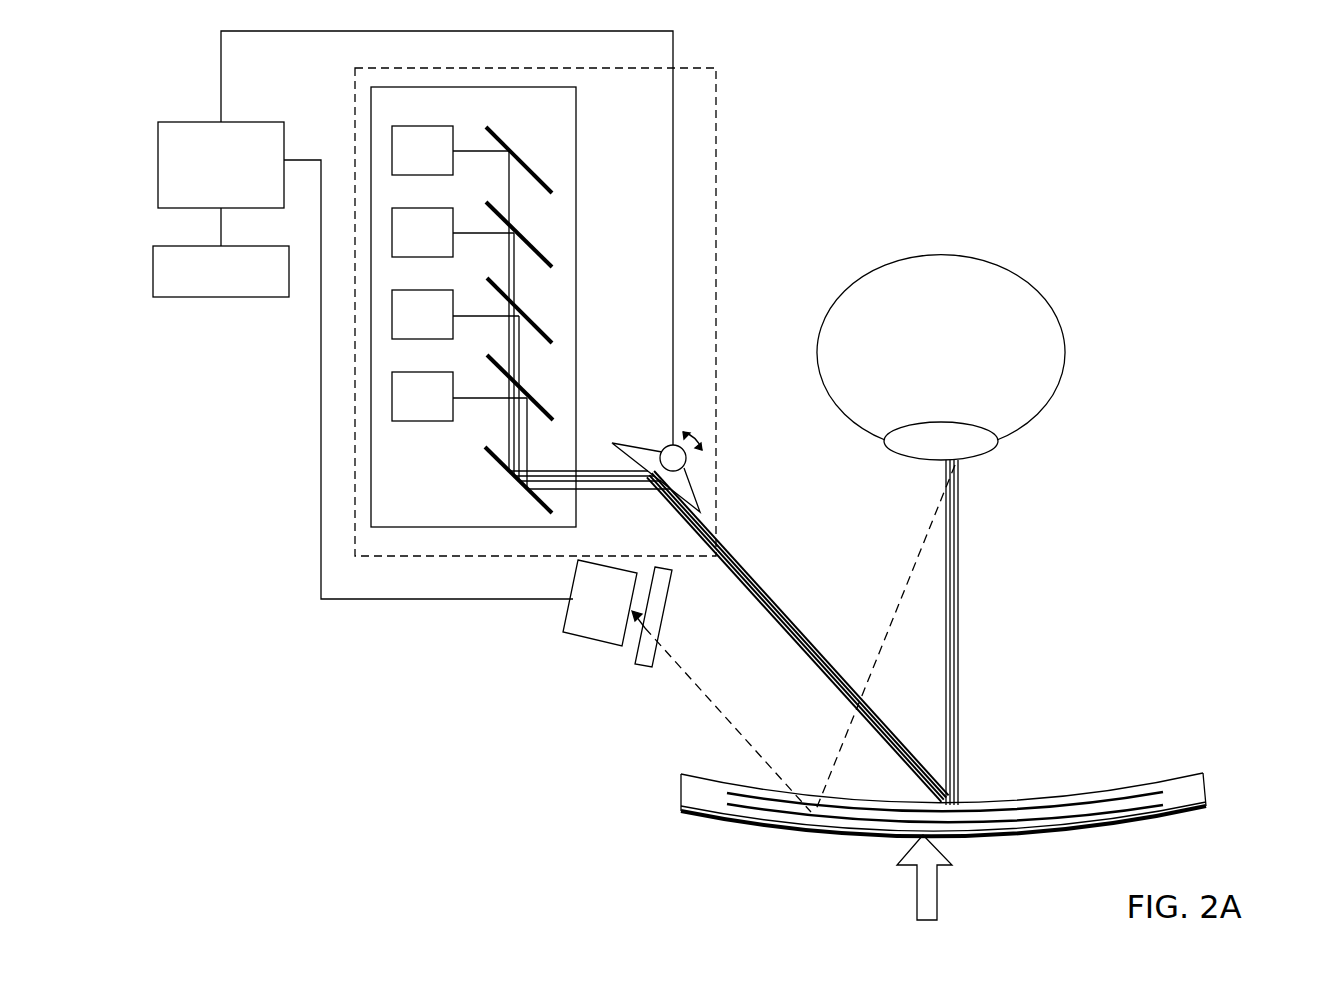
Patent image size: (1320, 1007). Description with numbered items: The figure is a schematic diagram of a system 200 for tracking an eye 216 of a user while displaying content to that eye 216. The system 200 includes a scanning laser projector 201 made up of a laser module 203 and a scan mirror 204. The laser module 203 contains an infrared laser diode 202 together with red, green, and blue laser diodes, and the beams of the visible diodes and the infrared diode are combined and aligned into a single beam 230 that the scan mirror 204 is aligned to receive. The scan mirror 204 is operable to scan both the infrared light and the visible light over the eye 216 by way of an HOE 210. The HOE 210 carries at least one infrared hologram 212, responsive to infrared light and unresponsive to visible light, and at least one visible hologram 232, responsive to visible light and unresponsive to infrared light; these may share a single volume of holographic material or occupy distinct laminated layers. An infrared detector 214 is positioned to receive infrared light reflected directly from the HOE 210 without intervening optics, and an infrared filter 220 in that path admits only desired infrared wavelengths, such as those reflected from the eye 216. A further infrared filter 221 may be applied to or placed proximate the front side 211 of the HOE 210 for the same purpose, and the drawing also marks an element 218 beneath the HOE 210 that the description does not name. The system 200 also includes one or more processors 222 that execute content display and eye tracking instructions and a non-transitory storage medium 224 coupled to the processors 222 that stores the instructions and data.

The system 200 is at (952, 117).
The scanning laser projector 201 is at (717, 155).
The infrared laser diode 202 is at (422, 150).
The laser module 203 is at (425, 291).
The scan mirror 204 is at (688, 488).
The HOE 210 is at (977, 844).
The front side 211 is at (778, 830).
The infrared hologram 212 is at (1002, 823).
The infrared detector 214 is at (577, 623).
The eye 216 is at (1043, 350).
The ambient light 218 is at (924, 894).
The infrared filter 220 is at (646, 653).
The infrared filter 221 is at (703, 818).
The processor 222 is at (221, 165).
The non-transitory storage medium 224 is at (221, 271).
The single beam 230 is at (530, 448).
The visible hologram 232 is at (1048, 808).